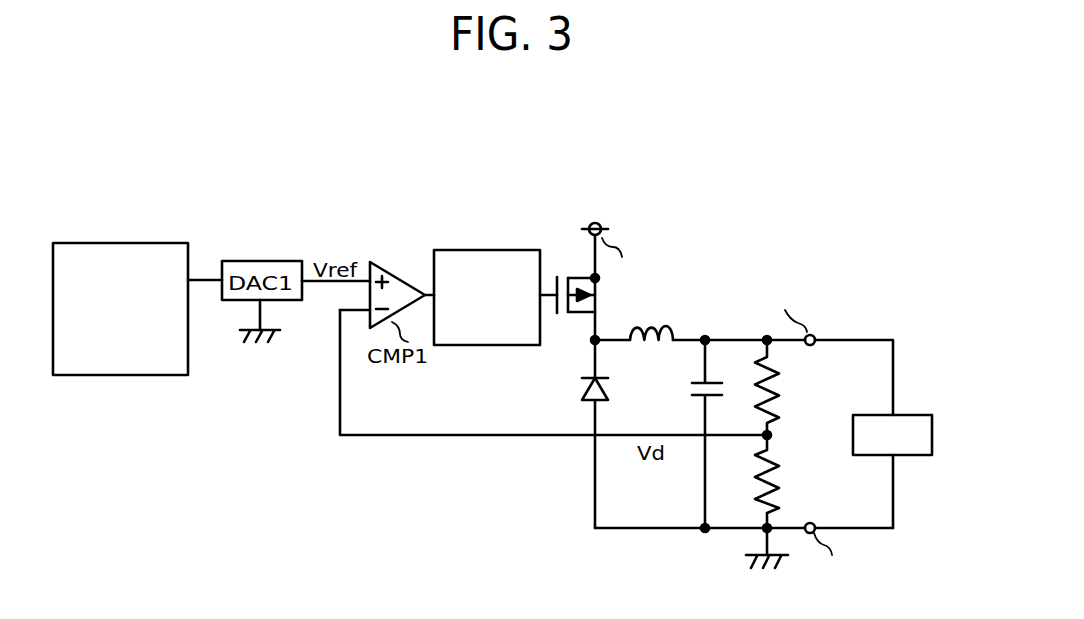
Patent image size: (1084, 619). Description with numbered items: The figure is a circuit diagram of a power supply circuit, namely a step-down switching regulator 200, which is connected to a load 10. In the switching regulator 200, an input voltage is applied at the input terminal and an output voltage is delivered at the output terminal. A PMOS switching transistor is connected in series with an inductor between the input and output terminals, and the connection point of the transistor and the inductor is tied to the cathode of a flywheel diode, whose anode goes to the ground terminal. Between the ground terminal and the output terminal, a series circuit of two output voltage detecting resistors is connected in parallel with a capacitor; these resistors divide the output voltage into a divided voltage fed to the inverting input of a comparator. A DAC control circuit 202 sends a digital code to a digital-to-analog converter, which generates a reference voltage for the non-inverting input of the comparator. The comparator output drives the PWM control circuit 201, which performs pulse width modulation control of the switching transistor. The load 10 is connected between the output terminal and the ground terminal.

The DAC control circuit 202 is at (115, 243).
The PWM control circuit 201 is at (471, 250).
The switching regulator 200 is at (720, 194).
The load 10 is at (870, 413).